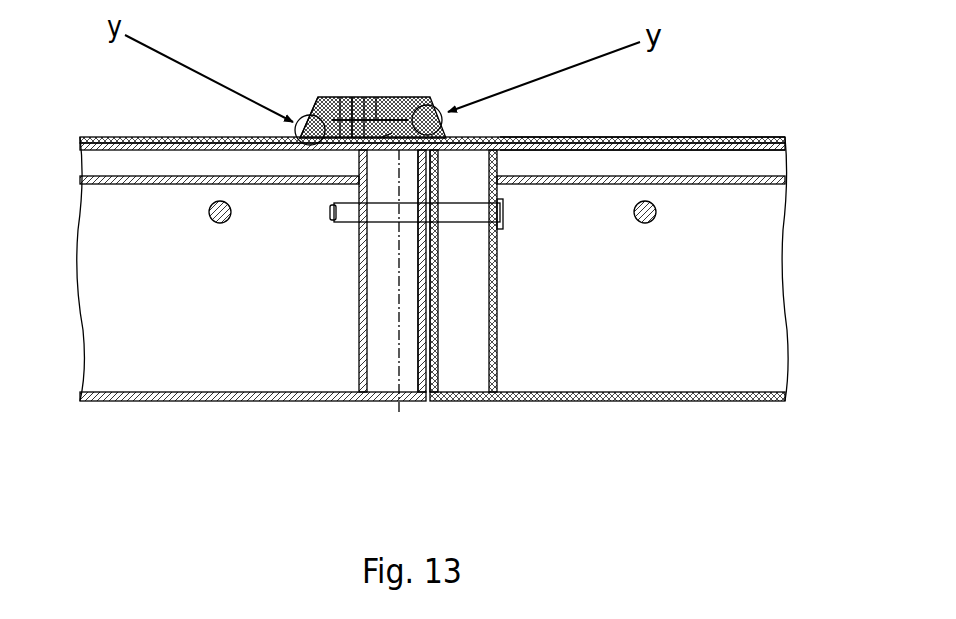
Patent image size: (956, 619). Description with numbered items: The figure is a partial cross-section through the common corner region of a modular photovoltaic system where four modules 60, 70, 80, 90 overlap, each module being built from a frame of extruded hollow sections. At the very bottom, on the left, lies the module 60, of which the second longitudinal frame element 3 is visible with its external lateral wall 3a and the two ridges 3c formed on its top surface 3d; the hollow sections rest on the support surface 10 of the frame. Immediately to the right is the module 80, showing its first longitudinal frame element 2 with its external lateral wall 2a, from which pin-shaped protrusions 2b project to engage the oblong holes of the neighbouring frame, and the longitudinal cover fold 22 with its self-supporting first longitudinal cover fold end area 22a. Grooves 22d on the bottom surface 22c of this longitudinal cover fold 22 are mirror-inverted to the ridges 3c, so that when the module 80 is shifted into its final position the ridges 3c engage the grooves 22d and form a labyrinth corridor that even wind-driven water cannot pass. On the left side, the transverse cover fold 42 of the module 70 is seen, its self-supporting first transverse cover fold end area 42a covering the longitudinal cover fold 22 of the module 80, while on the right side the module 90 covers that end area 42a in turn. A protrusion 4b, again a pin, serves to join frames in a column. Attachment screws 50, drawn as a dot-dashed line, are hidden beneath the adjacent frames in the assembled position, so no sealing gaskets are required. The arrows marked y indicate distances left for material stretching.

The first longitudinal frame element 2 is at (497, 277).
The external lateral wall of the first longitudinal frame element 2a is at (438, 315).
The protrusions 2b is at (473, 213).
The second longitudinal frame element 3 is at (360, 243).
The external lateral wall of the second longitudinal frame element 3a is at (412, 268).
The ridges 3c is at (306, 118).
The top surface of the second longitudinal frame element 3d is at (385, 110).
The protrusion 4b is at (213, 223).
The support surface 10 is at (540, 412).
The longitudinal cover fold 22 is at (427, 110).
The first longitudinal cover fold end area 22a is at (427, 120).
The bottom surface of the longitudinal cover fold 22c is at (390, 135).
The grooves 22d is at (355, 110).
The transverse cover fold 42 is at (180, 138).
The first transverse cover fold end area 42a is at (311, 94).
The attachment screws 50 is at (400, 367).
The first module 60 is at (157, 138).
The second module 70 is at (107, 138).
The third module 80 is at (537, 138).
The fourth module 90 is at (617, 138).